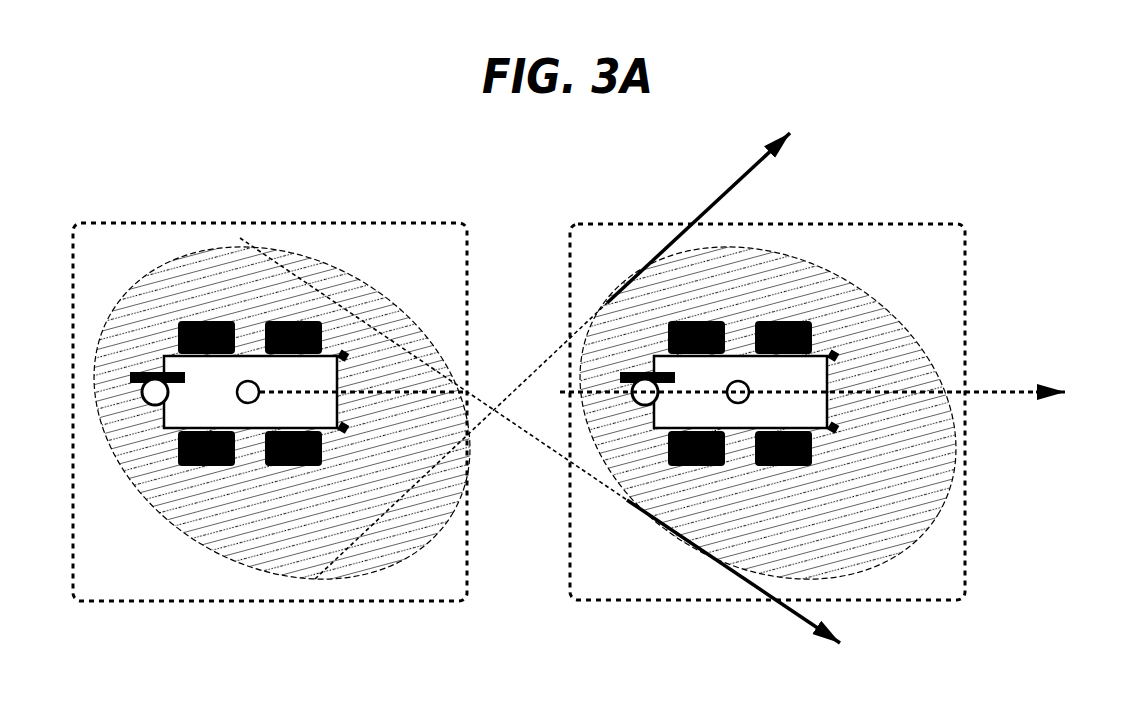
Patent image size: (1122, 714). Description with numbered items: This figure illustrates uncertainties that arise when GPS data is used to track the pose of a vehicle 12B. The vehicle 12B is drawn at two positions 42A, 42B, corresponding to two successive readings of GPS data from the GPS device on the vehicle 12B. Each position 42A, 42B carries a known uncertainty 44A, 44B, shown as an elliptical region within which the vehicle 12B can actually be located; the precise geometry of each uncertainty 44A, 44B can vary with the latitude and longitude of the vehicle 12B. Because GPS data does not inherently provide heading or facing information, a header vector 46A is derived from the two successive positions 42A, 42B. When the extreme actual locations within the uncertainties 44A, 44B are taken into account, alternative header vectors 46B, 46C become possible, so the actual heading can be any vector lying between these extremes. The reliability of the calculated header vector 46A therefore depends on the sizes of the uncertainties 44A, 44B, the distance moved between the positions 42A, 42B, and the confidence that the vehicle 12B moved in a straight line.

The vehicle 12B is at (318, 384).
The position 42A is at (254, 223).
The position 42B is at (775, 225).
The uncertainty 44A is at (358, 282).
The uncertainty 44B is at (850, 282).
The header vector 46A is at (1030, 388).
The header vector 46B is at (748, 172).
The header vector 46C is at (805, 622).